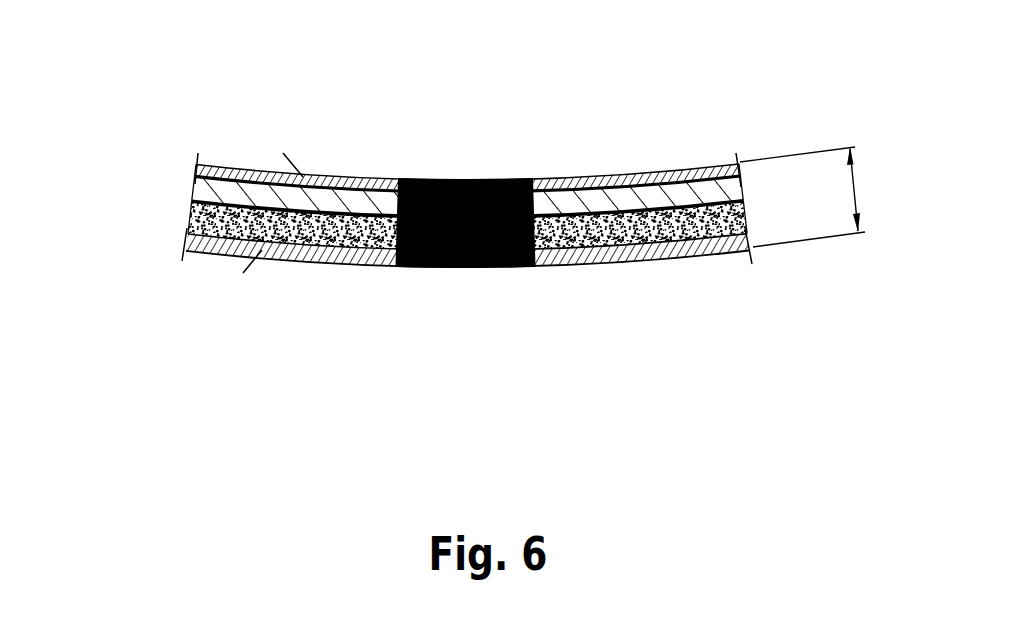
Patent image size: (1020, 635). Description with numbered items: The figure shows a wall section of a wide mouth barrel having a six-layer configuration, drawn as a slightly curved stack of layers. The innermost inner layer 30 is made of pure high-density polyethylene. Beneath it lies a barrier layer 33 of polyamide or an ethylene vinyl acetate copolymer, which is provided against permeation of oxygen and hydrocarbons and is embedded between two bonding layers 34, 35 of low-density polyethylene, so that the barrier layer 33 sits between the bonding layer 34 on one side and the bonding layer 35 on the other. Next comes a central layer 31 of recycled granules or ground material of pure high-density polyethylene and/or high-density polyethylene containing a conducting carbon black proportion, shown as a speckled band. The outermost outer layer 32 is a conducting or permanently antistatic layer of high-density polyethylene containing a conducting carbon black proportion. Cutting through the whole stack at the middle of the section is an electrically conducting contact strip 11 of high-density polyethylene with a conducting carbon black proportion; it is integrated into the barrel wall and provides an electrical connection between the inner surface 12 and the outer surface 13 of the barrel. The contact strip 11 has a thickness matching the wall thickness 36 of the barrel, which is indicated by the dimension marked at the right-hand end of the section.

The electrically conducting contact strip 11 is at (468, 262).
The inner surface 12 is at (298, 172).
The outer surface 13 is at (258, 257).
The inner layer 30 is at (700, 166).
The central layer 31 is at (185, 238).
The outer layer 32 is at (670, 257).
The barrier layer 33 is at (653, 200).
The bonding layer 34 is at (197, 170).
The bonding layer 35 is at (196, 203).
The wall thickness 36 is at (814, 197).